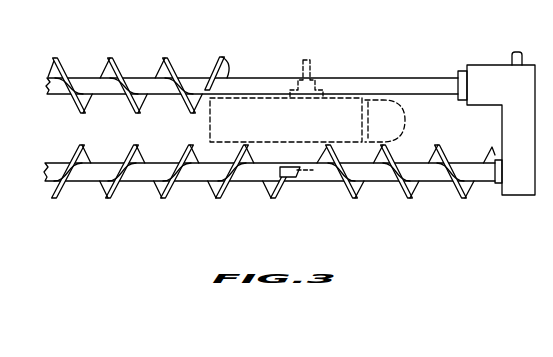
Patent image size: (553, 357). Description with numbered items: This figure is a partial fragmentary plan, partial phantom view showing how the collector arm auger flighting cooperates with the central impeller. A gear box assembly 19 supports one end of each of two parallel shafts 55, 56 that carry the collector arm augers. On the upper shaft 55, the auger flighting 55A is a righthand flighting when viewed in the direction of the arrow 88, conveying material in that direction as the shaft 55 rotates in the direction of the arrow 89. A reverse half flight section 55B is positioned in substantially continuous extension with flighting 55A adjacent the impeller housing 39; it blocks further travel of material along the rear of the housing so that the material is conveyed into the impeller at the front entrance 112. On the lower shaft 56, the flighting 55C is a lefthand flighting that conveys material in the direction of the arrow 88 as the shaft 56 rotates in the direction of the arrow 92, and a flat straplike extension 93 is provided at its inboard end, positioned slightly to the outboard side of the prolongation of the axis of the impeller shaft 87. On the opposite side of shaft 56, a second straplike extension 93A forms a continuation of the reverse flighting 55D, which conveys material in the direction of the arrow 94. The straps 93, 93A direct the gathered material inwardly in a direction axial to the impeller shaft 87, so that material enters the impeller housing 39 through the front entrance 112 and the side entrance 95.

The gear box assembly 19 is at (511, 90).
The impeller housing 39 is at (316, 126).
The shaft 55 is at (442, 66).
The auger flighting 55A is at (113, 63).
The reverse half flight section 55B is at (226, 63).
The flighting 55C is at (161, 193).
The reverse flighting 55D is at (410, 200).
The shaft 56 is at (468, 162).
The impeller shaft 87 is at (311, 63).
The arrow 88 is at (114, 107).
The arrow 89 is at (154, 86).
The arrow 92 is at (155, 169).
The flat straplike extension 93 is at (297, 176).
The second straplike extension 93A is at (308, 171).
The arrow 94 is at (208, 52).
The side entrance 95 is at (260, 143).
The front entrance 112 is at (205, 125).